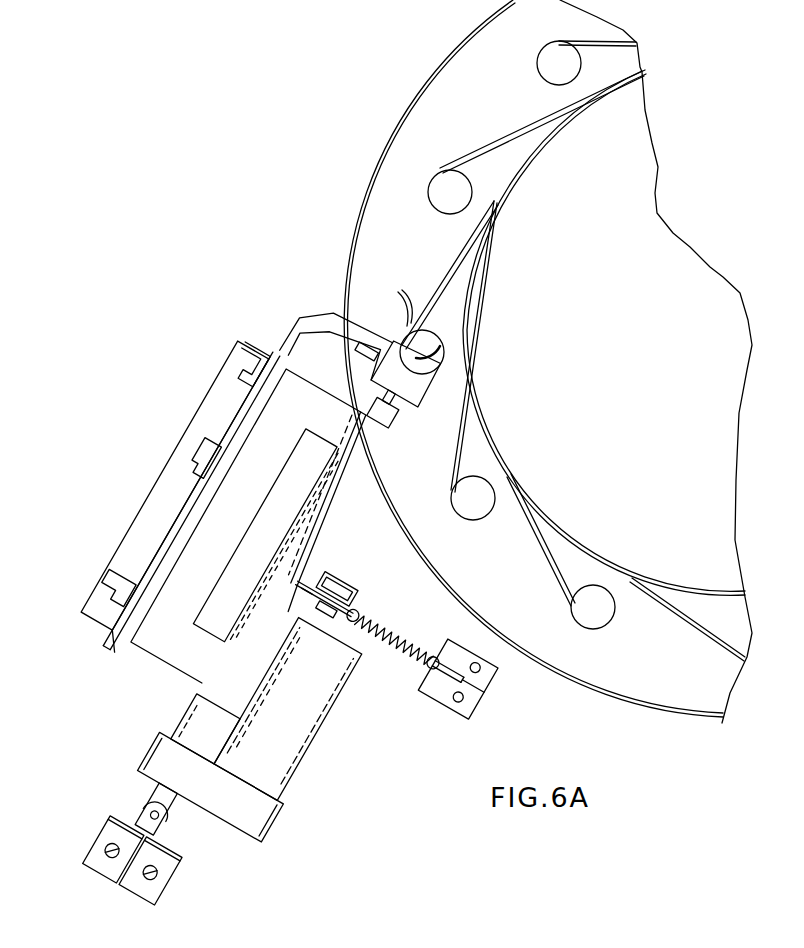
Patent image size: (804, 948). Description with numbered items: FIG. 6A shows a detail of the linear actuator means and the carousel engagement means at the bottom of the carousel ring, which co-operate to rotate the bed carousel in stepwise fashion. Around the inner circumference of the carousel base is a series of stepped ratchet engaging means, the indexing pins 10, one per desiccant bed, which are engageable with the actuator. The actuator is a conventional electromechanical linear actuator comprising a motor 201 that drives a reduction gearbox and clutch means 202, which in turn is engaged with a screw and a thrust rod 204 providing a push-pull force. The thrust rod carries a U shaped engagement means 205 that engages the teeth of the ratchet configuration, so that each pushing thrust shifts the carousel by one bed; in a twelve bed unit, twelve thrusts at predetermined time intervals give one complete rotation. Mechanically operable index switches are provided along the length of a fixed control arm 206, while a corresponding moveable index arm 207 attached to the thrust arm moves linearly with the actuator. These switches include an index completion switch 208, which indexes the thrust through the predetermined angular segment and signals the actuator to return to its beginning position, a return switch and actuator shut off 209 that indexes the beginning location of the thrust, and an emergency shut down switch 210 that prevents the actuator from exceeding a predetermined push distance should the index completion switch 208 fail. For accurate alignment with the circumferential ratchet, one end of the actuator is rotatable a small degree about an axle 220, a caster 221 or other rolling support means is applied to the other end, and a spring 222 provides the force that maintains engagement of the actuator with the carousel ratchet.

The indexing pins 10 is at (554, 65).
The motor 201 is at (310, 770).
The reduction gearbox and clutch means 202 is at (230, 813).
The thrust rod 204 is at (380, 413).
The U shaped engagement means 205 is at (413, 387).
The fixed control arm 206 is at (137, 543).
The moveable index arm 207 is at (310, 320).
The index completion switch 208 is at (197, 468).
The return switch and actuator shut off 209 is at (105, 590).
The emergency shut down switch 210 is at (248, 375).
The axle 220 is at (152, 812).
The caster 221 is at (356, 590).
The spring 222 is at (395, 650).